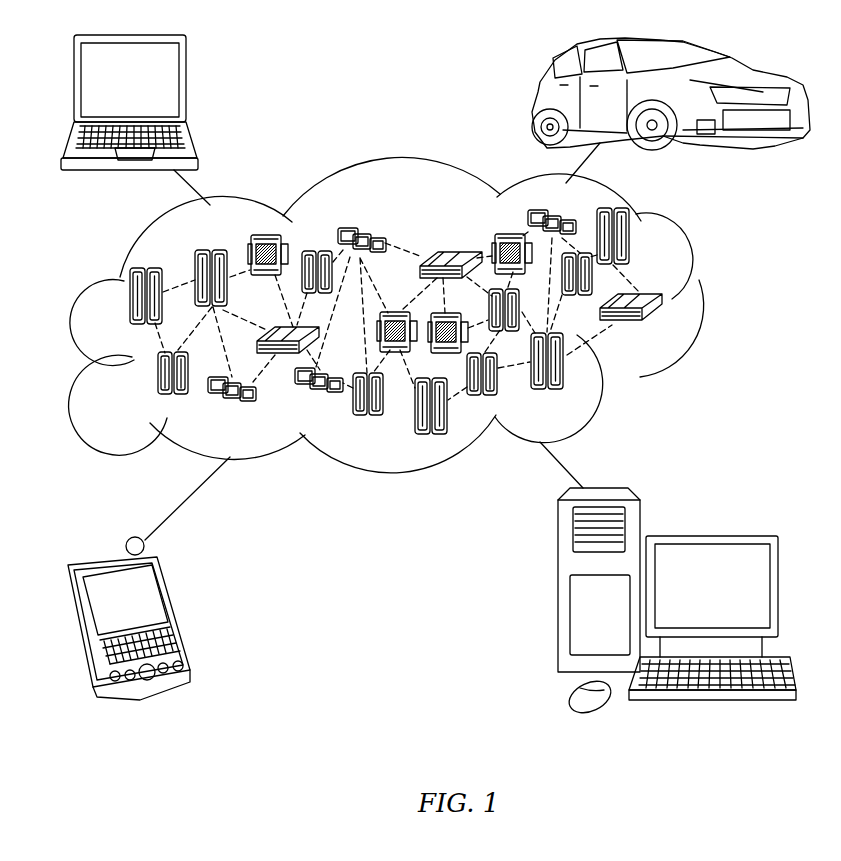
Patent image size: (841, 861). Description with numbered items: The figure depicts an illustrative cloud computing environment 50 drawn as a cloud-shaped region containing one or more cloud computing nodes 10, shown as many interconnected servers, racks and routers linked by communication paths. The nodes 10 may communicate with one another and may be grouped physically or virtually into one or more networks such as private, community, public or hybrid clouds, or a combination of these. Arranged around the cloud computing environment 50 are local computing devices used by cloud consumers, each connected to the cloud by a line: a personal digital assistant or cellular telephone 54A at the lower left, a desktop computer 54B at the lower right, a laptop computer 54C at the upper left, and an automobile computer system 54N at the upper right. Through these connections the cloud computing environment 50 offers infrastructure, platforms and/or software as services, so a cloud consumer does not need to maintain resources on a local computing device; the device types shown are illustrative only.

The cloud computing nodes 10 is at (668, 329).
The cloud computing environment 50 is at (710, 301).
The personal digital assistant or cellular telephone 54A is at (178, 606).
The desktop computer 54B is at (708, 535).
The laptop computer 54C is at (186, 88).
The automobile computer system 54N is at (535, 98).